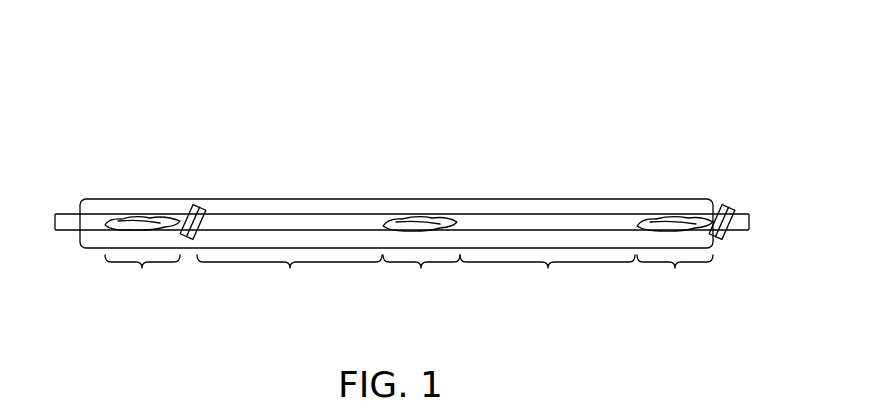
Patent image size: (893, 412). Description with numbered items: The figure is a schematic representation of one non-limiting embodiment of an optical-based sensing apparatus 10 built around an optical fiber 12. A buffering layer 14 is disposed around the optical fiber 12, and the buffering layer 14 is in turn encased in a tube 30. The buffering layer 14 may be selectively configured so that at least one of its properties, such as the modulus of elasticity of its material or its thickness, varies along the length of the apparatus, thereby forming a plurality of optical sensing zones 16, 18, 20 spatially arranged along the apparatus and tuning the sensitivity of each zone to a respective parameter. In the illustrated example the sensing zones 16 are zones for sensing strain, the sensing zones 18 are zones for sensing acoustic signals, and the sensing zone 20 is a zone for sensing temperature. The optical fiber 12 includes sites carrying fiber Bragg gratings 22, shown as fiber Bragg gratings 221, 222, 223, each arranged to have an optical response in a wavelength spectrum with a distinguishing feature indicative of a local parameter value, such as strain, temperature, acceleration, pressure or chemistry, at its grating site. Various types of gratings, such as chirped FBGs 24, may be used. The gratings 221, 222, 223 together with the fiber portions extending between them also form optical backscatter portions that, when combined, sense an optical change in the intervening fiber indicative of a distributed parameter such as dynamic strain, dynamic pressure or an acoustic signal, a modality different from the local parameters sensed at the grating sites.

The optical-based sensing apparatus 10 is at (392, 105).
The optical fiber 12 is at (243, 222).
The buffering layer 14 is at (303, 207).
The optical sensing zone 16 is at (409, 279).
The optical sensing zone 18 is at (416, 279).
The optical sensing zone 20 is at (421, 279).
The fiber Bragg gratings 22 is at (409, 195).
The fiber Bragg grating 221 is at (137, 220).
The fiber Bragg grating 222 is at (422, 222).
The fiber Bragg grating 223 is at (675, 222).
The chirped FBGs 24 is at (197, 207).
The tube 30 is at (555, 198).